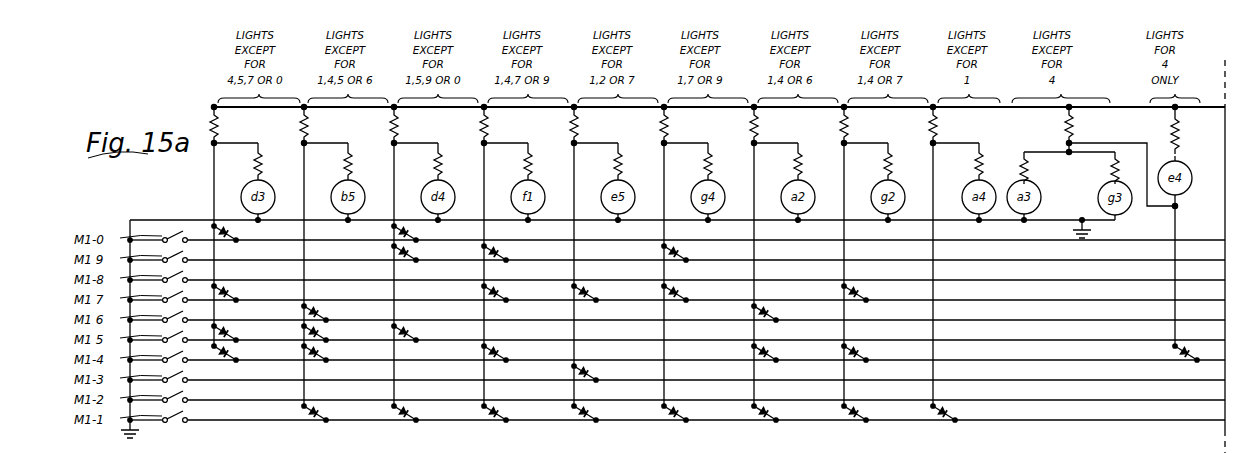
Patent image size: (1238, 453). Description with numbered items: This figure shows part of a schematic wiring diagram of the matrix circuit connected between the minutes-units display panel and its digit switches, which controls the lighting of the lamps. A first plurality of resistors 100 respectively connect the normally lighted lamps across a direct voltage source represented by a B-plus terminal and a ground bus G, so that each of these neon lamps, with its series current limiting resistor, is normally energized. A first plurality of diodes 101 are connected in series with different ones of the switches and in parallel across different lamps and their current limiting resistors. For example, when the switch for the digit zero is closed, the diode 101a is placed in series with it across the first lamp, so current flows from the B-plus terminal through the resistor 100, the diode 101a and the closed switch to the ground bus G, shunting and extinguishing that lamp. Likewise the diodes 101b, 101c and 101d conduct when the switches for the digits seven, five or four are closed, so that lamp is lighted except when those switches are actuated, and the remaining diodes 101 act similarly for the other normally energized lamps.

The resistors 100 is at (304, 128).
The diodes 101 is at (318, 350).
The diode 101a is at (228, 232).
The diode 101b is at (228, 292).
The diode 101c is at (228, 332).
The diode 101d is at (228, 352).
The ground bus G is at (135, 428).